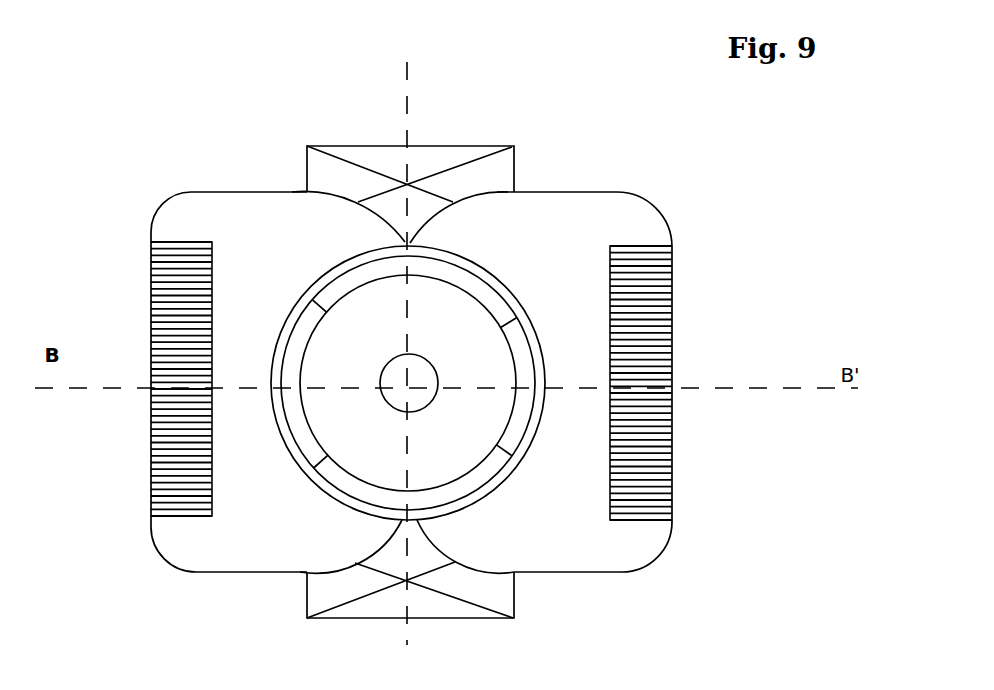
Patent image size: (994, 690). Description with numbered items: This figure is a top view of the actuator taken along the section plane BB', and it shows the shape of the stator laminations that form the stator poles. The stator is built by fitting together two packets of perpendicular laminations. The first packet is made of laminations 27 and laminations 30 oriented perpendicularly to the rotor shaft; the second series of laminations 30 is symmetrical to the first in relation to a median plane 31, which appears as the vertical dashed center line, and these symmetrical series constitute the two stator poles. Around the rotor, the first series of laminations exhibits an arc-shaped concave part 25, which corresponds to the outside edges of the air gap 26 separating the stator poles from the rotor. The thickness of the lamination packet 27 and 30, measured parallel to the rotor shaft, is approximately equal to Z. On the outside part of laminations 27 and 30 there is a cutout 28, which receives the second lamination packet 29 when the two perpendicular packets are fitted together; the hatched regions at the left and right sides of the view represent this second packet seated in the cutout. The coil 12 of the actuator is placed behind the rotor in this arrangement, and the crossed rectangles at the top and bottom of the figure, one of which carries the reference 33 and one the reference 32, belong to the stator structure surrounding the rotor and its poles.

The coil 12 is at (453, 156).
The arc-shaped concave part 25 is at (570, 352).
The air gap 26 is at (547, 394).
The laminations 27 is at (578, 277).
The cutout 28 is at (640, 361).
The second lamination packet 29 is at (650, 472).
The laminations 30 is at (273, 257).
The median plane 31 is at (416, 338).
The pole tip 32 is at (405, 242).
The lower stator pole piece 33 is at (408, 521).